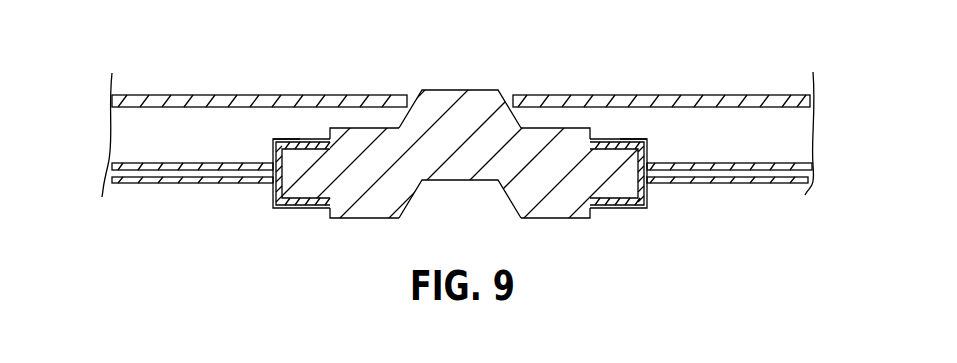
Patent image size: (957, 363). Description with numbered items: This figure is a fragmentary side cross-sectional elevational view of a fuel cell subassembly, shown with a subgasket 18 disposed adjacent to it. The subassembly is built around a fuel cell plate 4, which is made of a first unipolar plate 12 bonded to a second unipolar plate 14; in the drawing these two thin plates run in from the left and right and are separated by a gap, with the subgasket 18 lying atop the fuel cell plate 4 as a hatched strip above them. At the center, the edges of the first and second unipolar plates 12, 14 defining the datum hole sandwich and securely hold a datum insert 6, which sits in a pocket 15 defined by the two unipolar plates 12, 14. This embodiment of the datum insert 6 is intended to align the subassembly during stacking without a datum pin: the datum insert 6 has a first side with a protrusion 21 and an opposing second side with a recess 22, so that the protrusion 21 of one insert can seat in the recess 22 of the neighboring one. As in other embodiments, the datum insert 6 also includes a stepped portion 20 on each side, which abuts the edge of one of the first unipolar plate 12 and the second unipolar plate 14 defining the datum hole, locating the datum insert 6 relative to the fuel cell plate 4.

The fuel cell plate 4 is at (96, 159).
The datum insert 6 is at (479, 158).
The first unipolar plate 12 is at (157, 163).
The second unipolar plate 14 is at (200, 184).
The pocket 15 is at (280, 135).
The subgasket 18 is at (208, 95).
The stepped portion 20 is at (320, 142).
The protrusion 21 is at (457, 90).
The recess 22 is at (458, 182).